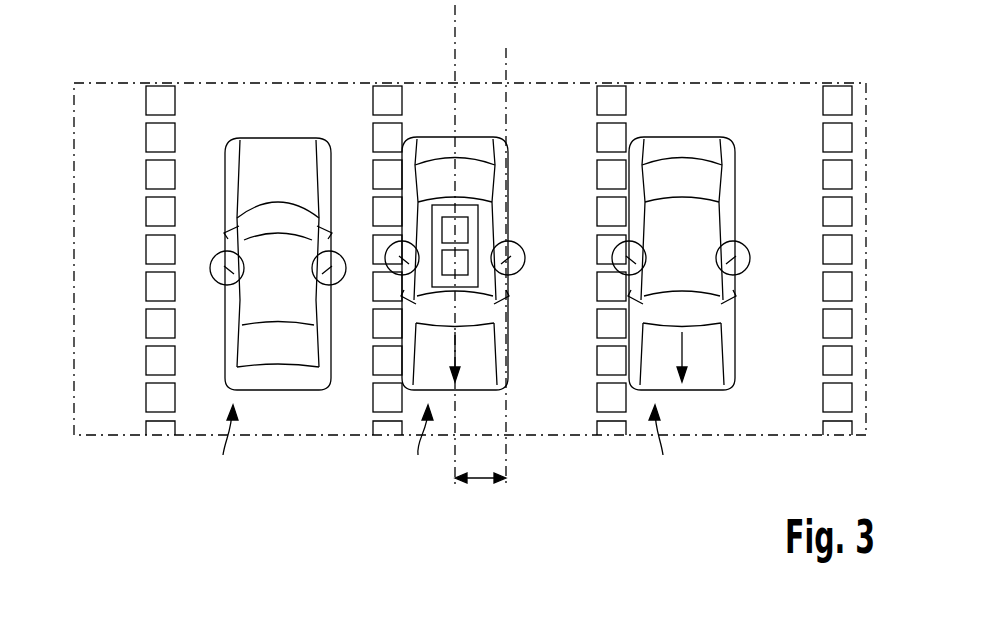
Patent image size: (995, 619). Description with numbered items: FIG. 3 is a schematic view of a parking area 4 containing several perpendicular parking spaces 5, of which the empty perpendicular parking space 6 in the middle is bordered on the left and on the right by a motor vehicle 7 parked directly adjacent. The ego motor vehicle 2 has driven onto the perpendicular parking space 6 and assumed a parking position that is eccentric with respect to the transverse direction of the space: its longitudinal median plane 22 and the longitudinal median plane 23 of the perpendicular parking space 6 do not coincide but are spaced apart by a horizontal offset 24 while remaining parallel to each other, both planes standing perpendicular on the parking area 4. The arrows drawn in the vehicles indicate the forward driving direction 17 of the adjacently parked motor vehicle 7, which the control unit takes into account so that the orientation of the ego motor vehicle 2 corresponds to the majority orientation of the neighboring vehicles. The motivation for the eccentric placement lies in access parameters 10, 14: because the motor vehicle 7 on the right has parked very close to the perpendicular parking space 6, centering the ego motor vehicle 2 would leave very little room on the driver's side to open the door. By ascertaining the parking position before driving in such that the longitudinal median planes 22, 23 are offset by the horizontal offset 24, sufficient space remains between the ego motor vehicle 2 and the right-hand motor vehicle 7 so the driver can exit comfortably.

The ego motor vehicle 2 is at (423, 447).
The parking area 4 is at (103, 172).
The perpendicular parking spaces 5 is at (193, 125).
The perpendicular parking space 6 is at (413, 123).
The motor vehicle 7 is at (443, 447).
The parameter 10 is at (525, 254).
The parameter 14 is at (210, 268).
The forward driving direction 17 is at (683, 345).
The longitudinal median plane 22 is at (456, 15).
The longitudinal median plane 23 is at (507, 65).
The horizontal offset 24 is at (480, 479).